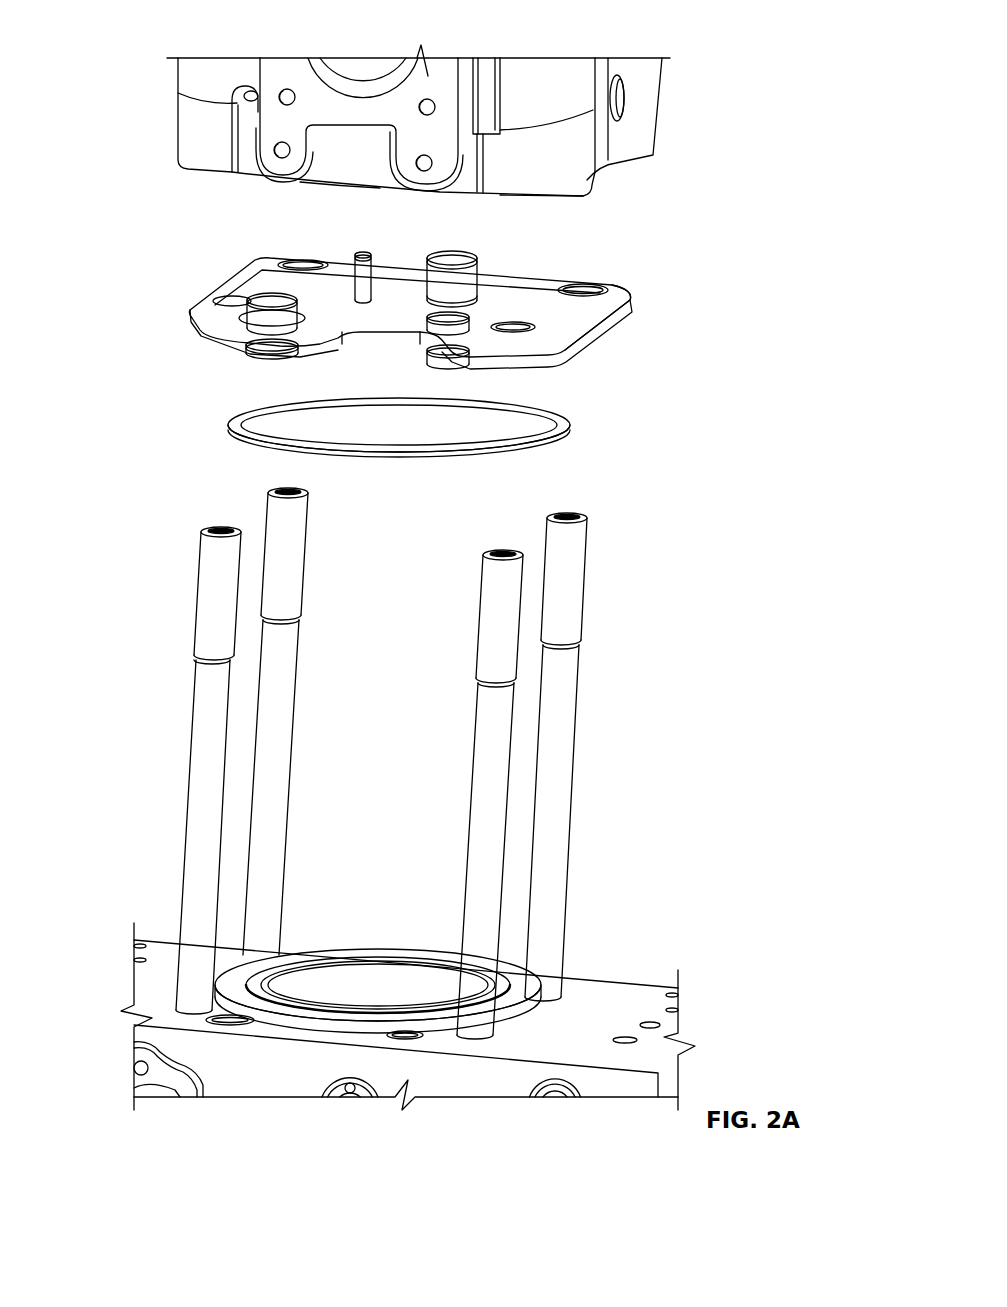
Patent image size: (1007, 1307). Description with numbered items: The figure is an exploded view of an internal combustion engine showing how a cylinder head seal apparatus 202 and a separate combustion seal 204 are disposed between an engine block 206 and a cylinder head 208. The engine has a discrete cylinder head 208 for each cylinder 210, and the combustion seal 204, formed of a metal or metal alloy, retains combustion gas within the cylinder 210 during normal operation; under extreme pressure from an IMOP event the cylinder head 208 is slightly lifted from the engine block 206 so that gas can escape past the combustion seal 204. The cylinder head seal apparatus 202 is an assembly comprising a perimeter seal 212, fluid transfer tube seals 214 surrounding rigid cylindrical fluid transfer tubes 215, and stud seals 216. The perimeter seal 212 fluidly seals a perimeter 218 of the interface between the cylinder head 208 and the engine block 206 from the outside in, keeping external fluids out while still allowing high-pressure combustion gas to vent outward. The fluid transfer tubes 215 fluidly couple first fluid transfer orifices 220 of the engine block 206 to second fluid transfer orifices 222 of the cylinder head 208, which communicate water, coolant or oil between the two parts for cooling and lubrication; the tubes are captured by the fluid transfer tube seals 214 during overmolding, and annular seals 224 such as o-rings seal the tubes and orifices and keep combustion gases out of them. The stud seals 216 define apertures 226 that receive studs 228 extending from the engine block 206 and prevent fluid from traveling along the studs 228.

The cylinder head seal apparatus 202 is at (609, 278).
The combustion seal 204 is at (570, 423).
The engine block 206 is at (622, 990).
The cylinder head 208 is at (650, 104).
The cylinder 210 is at (380, 955).
The perimeter seal 212 is at (588, 332).
The fluid transfer tube seal 214 is at (262, 312).
The fluid transfer tube 215 is at (270, 300).
The stud seal 216 is at (548, 330).
The perimeter 218 is at (582, 193).
The first fluid transfer orifice 220 is at (258, 1024).
The second fluid transfer orifice 222 is at (338, 182).
The annular seal 224 is at (297, 300).
The aperture 226 is at (512, 336).
The stud 228 is at (587, 571).